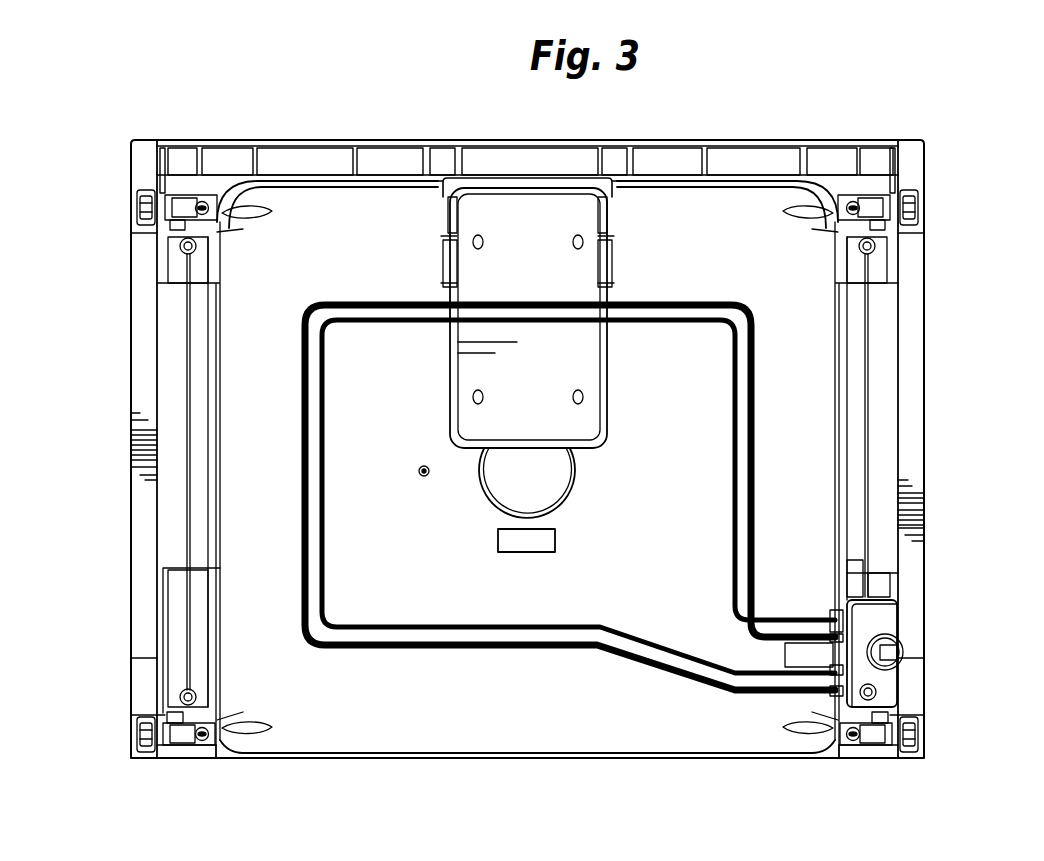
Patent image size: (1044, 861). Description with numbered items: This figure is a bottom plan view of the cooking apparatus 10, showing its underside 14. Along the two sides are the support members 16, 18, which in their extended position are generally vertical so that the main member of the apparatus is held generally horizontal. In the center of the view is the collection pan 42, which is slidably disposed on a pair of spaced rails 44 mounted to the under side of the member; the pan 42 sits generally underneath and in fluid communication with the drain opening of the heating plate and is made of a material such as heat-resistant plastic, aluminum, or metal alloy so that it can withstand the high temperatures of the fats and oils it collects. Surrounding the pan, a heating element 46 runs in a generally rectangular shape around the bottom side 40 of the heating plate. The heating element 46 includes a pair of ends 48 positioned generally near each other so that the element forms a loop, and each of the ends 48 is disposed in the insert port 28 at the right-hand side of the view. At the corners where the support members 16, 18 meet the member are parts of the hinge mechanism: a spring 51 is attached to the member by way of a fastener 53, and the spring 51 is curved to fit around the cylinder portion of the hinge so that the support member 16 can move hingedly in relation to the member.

The cooking apparatus 10 is at (962, 226).
The underside 14 is at (602, 772).
The support member 16 is at (925, 340).
The support member 18 is at (132, 182).
The insert port 28 is at (887, 622).
The bottom side 40 is at (396, 732).
The collection pan 42 is at (527, 217).
The rails 44 is at (441, 232).
The heating element 46 is at (487, 648).
The ends 48 is at (845, 628).
The spring 51 is at (180, 207).
The fastener 53 is at (203, 203).